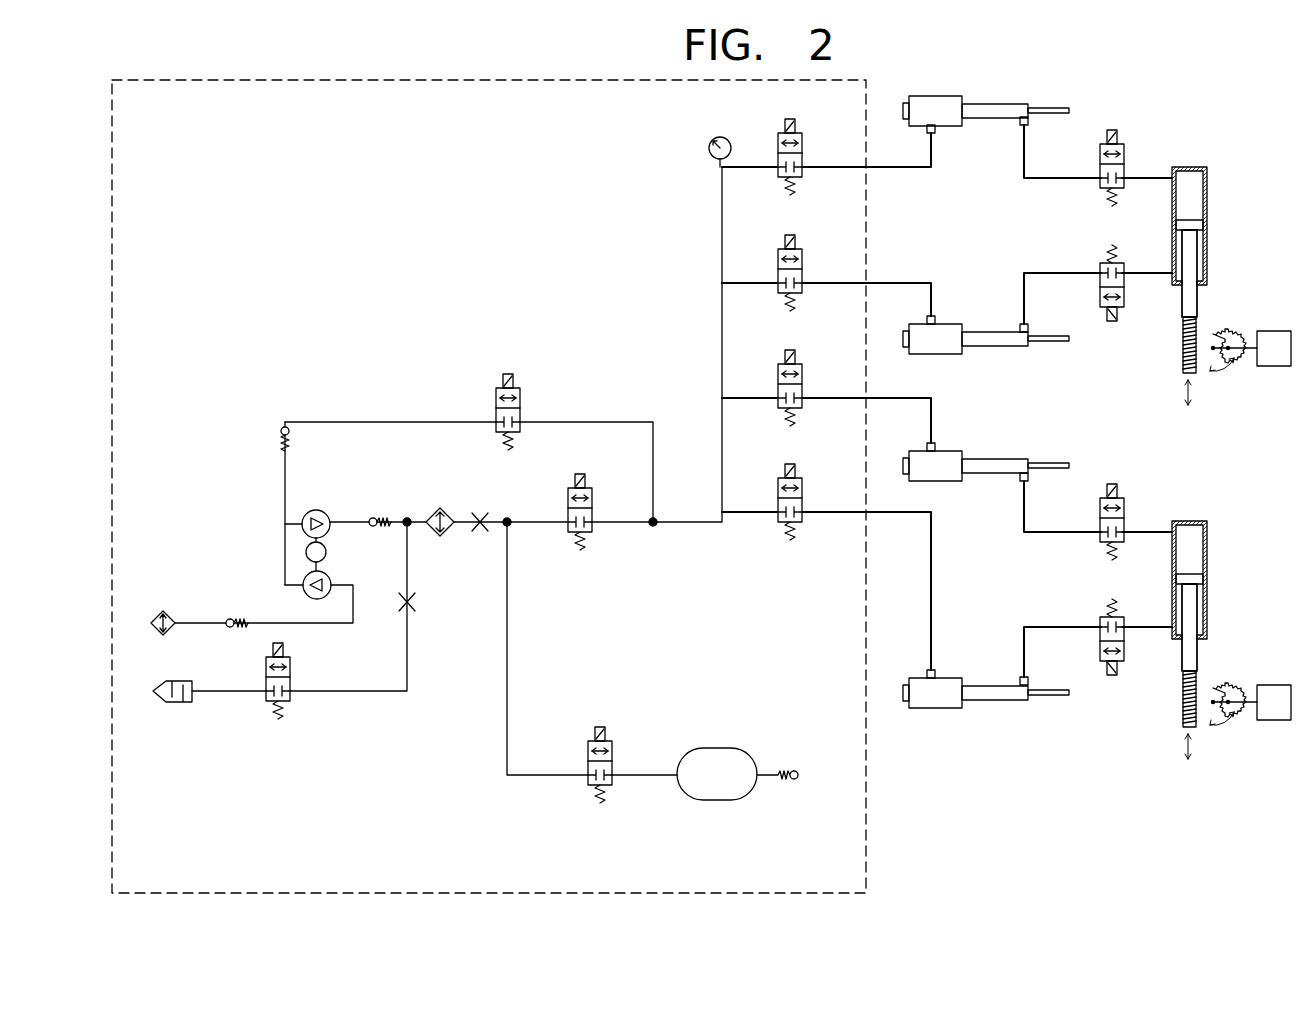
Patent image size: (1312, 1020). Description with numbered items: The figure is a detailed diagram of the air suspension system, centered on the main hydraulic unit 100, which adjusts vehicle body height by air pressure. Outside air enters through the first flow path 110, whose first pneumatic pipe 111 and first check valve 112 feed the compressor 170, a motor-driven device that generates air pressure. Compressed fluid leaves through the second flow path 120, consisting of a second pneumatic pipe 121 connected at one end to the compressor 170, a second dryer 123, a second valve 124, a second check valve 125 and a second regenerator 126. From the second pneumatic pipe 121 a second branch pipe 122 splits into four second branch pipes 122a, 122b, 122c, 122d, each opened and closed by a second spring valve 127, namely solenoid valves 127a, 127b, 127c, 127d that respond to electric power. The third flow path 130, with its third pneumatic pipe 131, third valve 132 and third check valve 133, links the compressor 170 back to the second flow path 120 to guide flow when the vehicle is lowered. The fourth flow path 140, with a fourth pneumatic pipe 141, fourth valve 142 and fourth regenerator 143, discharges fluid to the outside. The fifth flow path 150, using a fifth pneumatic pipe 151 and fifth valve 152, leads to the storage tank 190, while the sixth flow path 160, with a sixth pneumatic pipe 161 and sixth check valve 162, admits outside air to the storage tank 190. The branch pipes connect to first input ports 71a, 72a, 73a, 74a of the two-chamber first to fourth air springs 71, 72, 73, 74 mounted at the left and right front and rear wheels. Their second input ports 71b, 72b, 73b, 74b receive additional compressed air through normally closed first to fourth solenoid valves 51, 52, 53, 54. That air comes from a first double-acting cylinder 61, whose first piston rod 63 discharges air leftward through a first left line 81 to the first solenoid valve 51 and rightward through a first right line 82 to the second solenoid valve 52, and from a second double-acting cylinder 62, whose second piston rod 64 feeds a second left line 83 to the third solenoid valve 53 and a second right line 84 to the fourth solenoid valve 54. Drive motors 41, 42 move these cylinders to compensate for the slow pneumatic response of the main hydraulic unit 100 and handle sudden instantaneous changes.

The main hydraulic unit 100 is at (866, 827).
The first flow path 110 is at (225, 546).
The first pneumatic pipe 111 is at (275, 621).
The first check valve 112 is at (226, 621).
The second flow path 120 is at (552, 661).
The second pneumatic pipe 121 is at (632, 523).
The second branch pipe 122 is at (747, 514).
The second branch pipe 122a is at (745, 511).
The second branch pipe 122b is at (749, 397).
The second branch pipe 122c is at (749, 282).
The second branch pipe 122d is at (757, 165).
The second dryer 123 is at (445, 535).
The second valve 124 is at (592, 530).
The second check valve 125 is at (383, 528).
The second regenerator 126 is at (483, 528).
The second spring valve 127 is at (818, 546).
The second spring valve 127a is at (803, 477).
The second spring valve 127b is at (803, 363).
The second spring valve 127c is at (803, 249).
The second spring valve 127d is at (803, 133).
The third flow path 130 is at (288, 324).
The third pneumatic pipe 131 is at (383, 421).
The third valve 132 is at (495, 386).
The third check valve 133 is at (285, 427).
The fourth flow path 140 is at (310, 784).
The fourth pneumatic pipe 141 is at (370, 693).
The fourth valve 142 is at (280, 719).
The fourth regenerator 143 is at (428, 606).
The fifth flow path 150 is at (548, 864).
The fifth pneumatic pipe 151 is at (537, 776).
The fifth valve 152 is at (586, 804).
The sixth flow path 160 is at (760, 864).
The sixth pneumatic pipe 161 is at (779, 776).
The sixth check valve 162 is at (795, 776).
The compressor 170 is at (308, 548).
The storage tank 190 is at (717, 801).
The first air spring 71 is at (986, 686).
The first input port 71a is at (935, 670).
The second input port 71b is at (1022, 677).
The second air spring 72 is at (972, 456).
The first input port 72a is at (935, 443).
The second input port 72b is at (1022, 481).
The third air spring 73 is at (972, 312).
The first input port 73a is at (935, 316).
The second input port 73b is at (1022, 324).
The fourth air spring 74 is at (971, 137).
The first input port 74a is at (935, 134).
The second input port 74b is at (1022, 126).
The first solenoid valve 51 is at (1098, 622).
The second solenoid valve 52 is at (1098, 535).
The third solenoid valve 53 is at (1098, 268).
The fourth solenoid valve 54 is at (1098, 183).
The first double-acting cylinder 61 is at (1231, 618).
The second double-acting cylinder 62 is at (1231, 265).
The first piston rod 63 is at (1190, 598).
The second piston rod 64 is at (1190, 243).
The first left line 81 is at (1148, 627).
The first right line 82 is at (1150, 532).
The second left line 83 is at (1148, 273).
The second right line 84 is at (1150, 178).
The drive motor 41 is at (1272, 684).
The drive motor 42 is at (1272, 331).